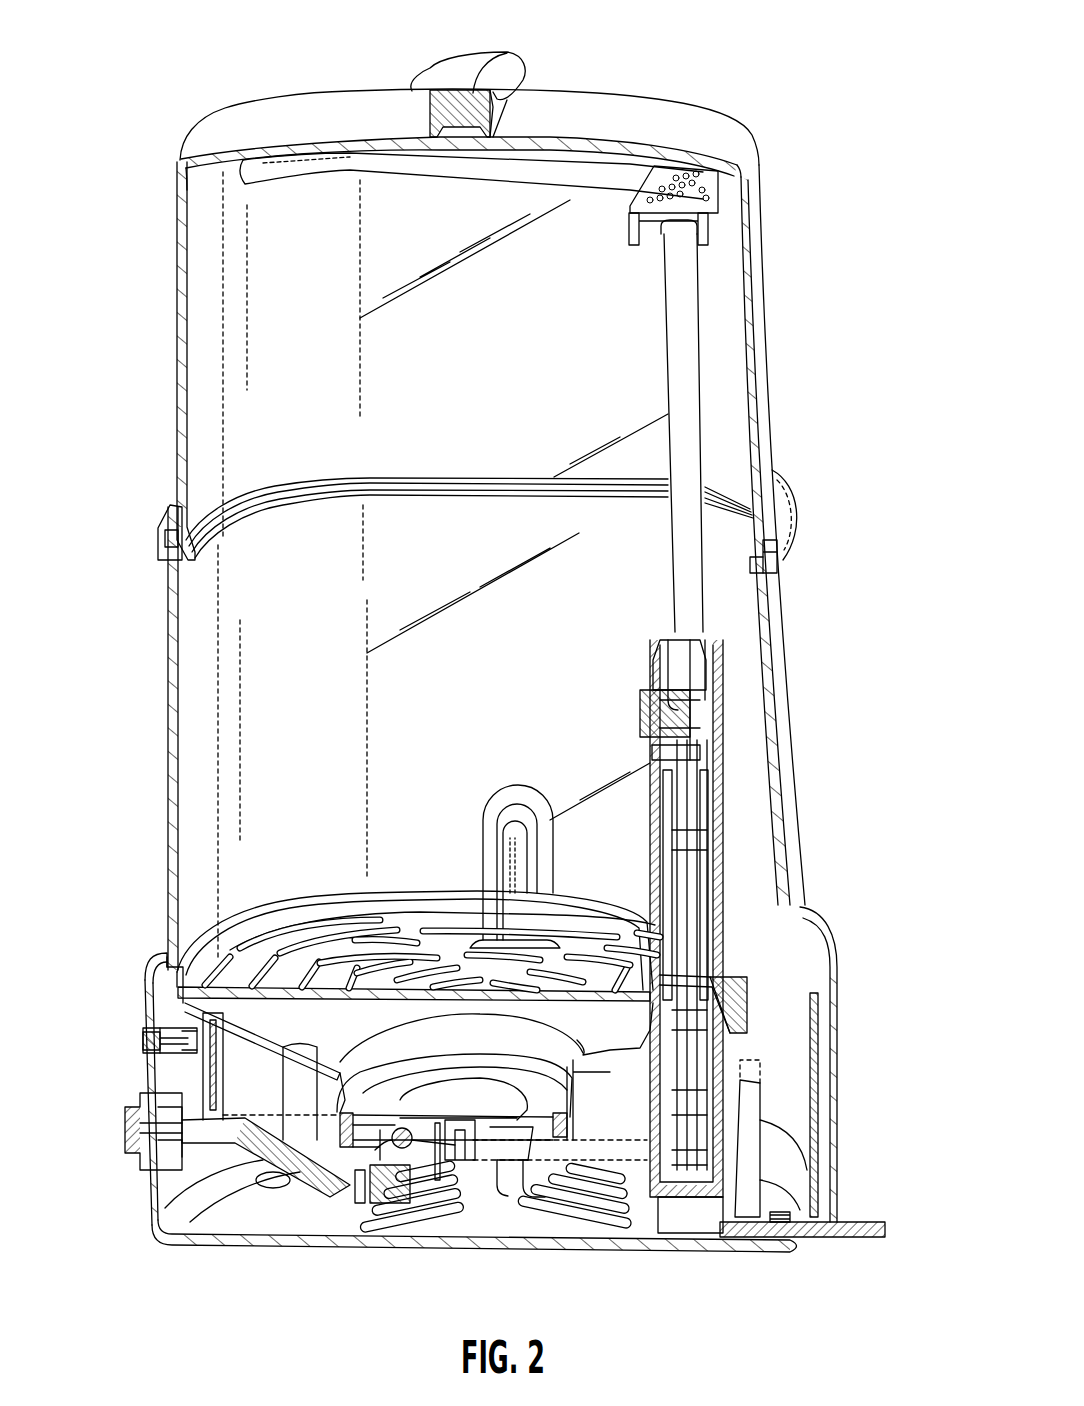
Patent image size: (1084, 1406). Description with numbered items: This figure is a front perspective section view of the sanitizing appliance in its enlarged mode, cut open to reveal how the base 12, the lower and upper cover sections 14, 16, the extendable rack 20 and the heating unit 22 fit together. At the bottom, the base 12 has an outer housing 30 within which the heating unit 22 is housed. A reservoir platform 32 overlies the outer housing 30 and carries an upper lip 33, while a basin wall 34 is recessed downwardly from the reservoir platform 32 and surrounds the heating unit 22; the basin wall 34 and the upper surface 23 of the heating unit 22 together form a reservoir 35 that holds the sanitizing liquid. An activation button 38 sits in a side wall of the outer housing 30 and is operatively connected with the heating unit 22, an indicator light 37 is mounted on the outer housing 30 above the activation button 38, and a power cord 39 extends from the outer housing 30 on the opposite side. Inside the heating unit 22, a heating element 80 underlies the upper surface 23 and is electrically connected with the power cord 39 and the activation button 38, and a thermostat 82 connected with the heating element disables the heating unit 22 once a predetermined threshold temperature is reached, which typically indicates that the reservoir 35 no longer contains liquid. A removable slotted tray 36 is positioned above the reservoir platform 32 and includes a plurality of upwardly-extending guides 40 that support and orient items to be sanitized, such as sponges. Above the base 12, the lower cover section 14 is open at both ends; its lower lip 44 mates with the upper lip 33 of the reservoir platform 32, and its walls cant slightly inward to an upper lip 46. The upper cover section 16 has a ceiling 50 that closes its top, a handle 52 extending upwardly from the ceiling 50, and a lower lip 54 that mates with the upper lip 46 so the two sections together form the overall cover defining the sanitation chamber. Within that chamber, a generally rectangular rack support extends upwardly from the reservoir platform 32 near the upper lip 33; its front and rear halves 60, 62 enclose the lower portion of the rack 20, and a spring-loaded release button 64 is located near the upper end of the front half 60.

The base 12 is at (887, 1032).
The lower cover section 14 is at (773, 683).
The upper cover section 16 is at (755, 318).
The extendable rack 20 is at (727, 537).
The heating unit 22 is at (492, 1196).
The upper surface 23 is at (457, 1100).
The outer housing 30 is at (823, 1143).
The reservoir platform 32 is at (240, 1014).
The upper lip 33 is at (160, 955).
The basin wall 34 is at (333, 1100).
The reservoir 35 is at (387, 1102).
The slotted tray 36 is at (243, 968).
The indicator light 37 is at (160, 1040).
The activation button 38 is at (125, 1125).
The power cord 39 is at (863, 1224).
The guides 40 is at (548, 852).
The lower lip 44 is at (175, 963).
The upper lip 46 is at (160, 542).
The ceiling 50 is at (613, 110).
The handle 52 is at (497, 53).
The lower lip 54 is at (788, 554).
The front half 60 is at (657, 863).
The rear half 62 is at (705, 860).
The spring-loaded release button 64 is at (641, 717).
The heating element 80 is at (402, 1146).
The thermostat 82 is at (507, 1143).